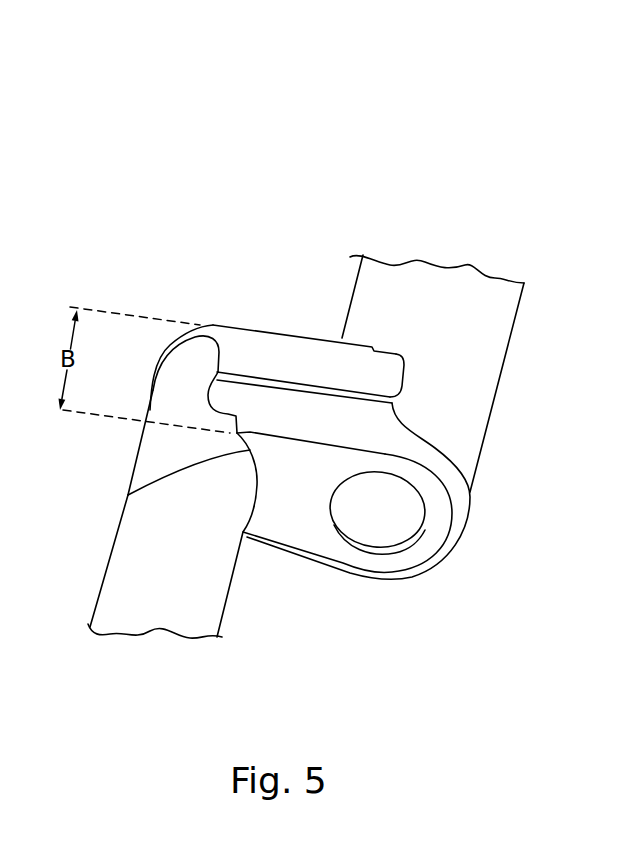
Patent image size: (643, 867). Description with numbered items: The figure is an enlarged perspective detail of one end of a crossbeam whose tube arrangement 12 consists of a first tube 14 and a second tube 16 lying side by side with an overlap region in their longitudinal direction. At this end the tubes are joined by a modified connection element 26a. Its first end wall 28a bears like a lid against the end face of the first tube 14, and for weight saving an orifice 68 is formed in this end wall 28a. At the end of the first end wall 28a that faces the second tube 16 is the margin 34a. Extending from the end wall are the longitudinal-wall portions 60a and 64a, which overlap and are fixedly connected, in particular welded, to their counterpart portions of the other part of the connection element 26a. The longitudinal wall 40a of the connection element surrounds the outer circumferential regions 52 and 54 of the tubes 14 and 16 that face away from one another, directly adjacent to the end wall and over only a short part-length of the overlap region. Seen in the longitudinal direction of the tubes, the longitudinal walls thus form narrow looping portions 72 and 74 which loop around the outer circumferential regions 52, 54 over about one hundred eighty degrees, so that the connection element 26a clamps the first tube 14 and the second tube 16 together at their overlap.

The tube arrangement 12 is at (457, 153).
The first tube 14 is at (498, 315).
The second tube 16 is at (129, 576).
The connection element 26a is at (273, 327).
The first end wall 28a is at (303, 520).
The margin 34a is at (128, 495).
The longitudinal wall 40a is at (247, 373).
The outer circumferential region 52 is at (143, 408).
The outer circumferential region 54 is at (495, 392).
The longitudinal-wall portion 60a is at (287, 420).
The longitudinal-wall portion 64a is at (300, 355).
The orifice 68 is at (410, 543).
The looping portion 72 is at (170, 347).
The looping portion 74 is at (460, 508).